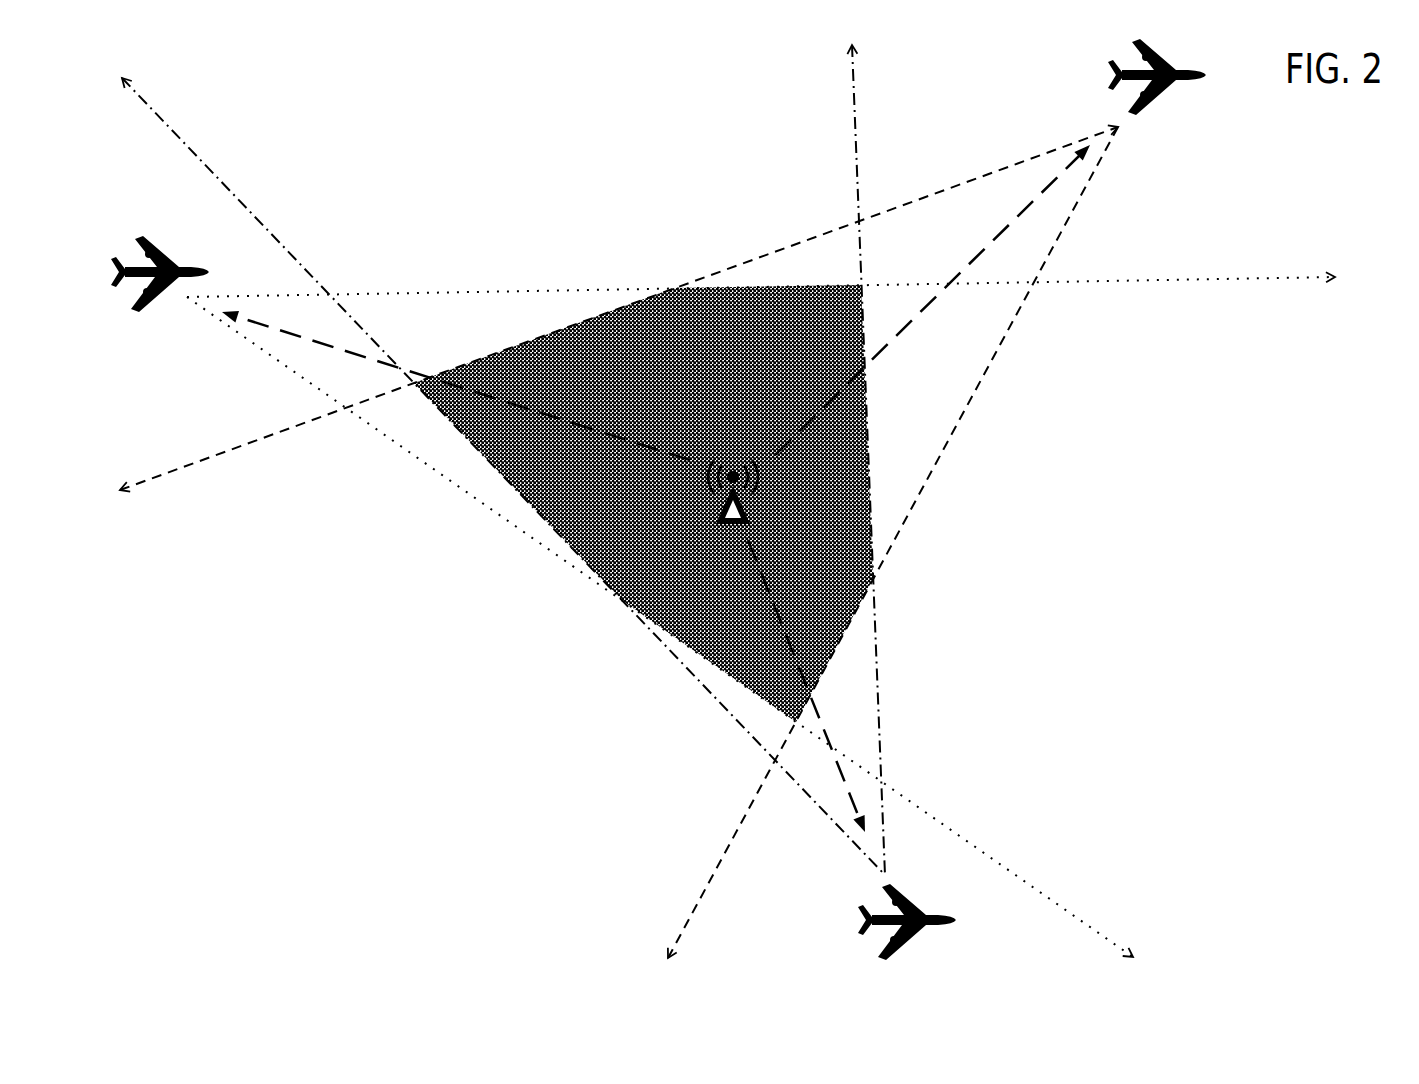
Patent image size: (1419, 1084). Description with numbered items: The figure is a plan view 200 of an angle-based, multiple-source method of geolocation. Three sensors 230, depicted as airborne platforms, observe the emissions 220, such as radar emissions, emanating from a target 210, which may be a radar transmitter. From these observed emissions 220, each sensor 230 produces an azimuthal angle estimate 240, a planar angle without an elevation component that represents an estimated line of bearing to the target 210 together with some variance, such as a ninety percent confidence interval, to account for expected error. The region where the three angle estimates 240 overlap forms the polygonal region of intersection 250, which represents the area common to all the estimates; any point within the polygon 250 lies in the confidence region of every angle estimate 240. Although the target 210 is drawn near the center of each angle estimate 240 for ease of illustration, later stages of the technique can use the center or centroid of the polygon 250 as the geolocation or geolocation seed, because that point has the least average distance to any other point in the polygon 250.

The plan view 200 is at (295, 90).
The target 210 is at (720, 507).
The emissions 220 is at (517, 402).
The sensors 230 is at (1165, 95).
The azimuthal angle estimates 240 is at (997, 350).
The polygonal region of intersection 250 is at (757, 428).